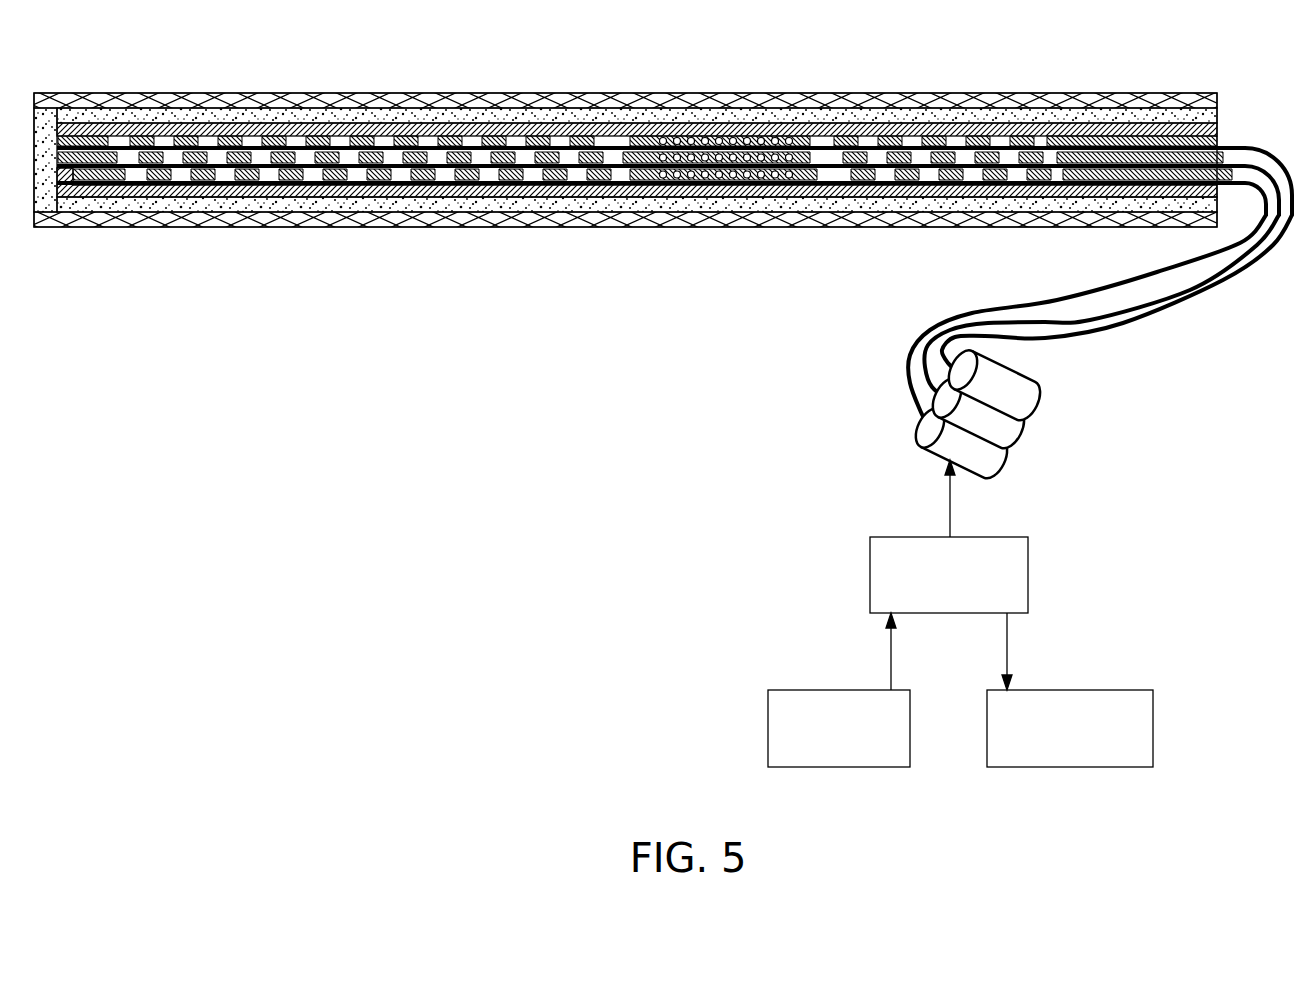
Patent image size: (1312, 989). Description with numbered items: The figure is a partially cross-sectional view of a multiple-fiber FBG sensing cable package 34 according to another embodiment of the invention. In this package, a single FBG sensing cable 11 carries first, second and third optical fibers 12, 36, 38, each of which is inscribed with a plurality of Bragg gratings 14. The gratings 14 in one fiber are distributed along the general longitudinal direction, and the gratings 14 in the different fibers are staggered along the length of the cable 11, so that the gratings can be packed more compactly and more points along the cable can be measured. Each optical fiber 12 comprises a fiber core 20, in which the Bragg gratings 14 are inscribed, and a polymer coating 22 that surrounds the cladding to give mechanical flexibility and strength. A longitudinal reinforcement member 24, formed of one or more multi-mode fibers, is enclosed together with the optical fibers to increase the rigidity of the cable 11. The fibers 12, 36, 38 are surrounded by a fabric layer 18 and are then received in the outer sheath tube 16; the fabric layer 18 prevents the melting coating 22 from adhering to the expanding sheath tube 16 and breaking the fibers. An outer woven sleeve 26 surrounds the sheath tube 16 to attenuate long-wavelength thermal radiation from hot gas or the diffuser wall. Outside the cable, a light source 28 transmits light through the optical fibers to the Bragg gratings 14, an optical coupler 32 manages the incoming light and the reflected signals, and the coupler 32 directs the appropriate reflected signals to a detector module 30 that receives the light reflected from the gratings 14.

The FBG sensing cable 11 is at (150, 88).
The optical fiber 12 is at (633, 140).
The Bragg gratings 14 is at (462, 142).
The outer sheath tube 16 is at (282, 113).
The fabric layer 18 is at (373, 125).
The fiber core 20 is at (535, 175).
The polymer coating 22 is at (580, 177).
The longitudinal reinforcement member 24 is at (873, 173).
The outer woven sleeve 26 is at (910, 100).
The light source 28 is at (795, 690).
The detector module 30 is at (1115, 690).
The optical coupler 32 is at (1013, 537).
The FBG sensing cable package 34 is at (168, 600).
The second optical fiber 36 is at (697, 143).
The third optical fiber 38 is at (790, 147).